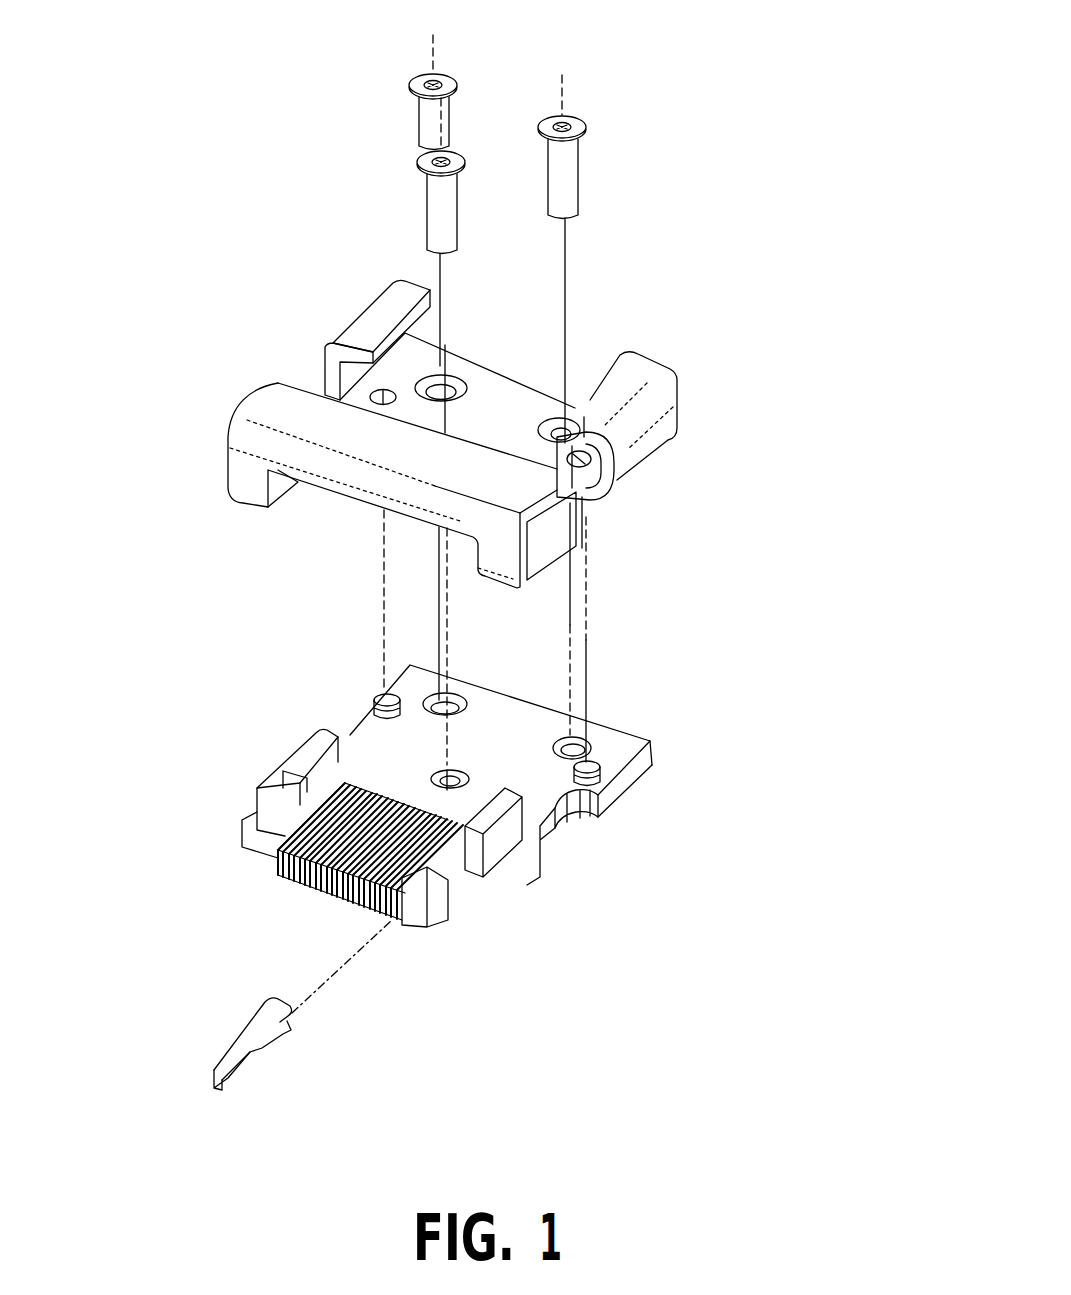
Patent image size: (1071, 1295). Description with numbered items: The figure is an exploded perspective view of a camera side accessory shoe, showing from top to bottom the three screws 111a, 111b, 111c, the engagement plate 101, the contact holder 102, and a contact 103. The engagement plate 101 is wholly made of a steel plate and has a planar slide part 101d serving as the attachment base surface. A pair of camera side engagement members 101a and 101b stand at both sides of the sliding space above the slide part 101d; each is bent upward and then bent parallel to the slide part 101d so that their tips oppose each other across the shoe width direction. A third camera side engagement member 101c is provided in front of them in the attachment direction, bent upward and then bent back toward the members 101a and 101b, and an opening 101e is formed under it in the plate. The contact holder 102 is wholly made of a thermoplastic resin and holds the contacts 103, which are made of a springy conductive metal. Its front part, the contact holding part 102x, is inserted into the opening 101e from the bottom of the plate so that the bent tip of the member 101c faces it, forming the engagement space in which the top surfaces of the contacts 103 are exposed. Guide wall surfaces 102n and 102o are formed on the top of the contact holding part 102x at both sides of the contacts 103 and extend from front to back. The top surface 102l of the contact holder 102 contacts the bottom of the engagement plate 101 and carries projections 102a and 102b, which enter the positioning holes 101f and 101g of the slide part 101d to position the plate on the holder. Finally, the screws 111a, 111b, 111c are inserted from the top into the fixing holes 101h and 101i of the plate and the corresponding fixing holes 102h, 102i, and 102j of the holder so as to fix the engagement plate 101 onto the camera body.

The engagement plate 101 is at (497, 459).
The camera side engagement member 101a is at (390, 315).
The camera side engagement member 101b is at (610, 387).
The camera side engagement member 101c is at (321, 476).
The slide part 101d is at (508, 402).
The opening 101e is at (322, 485).
The positioning hole 101f is at (367, 388).
The positioning hole 101g is at (592, 468).
The fixing hole 101h is at (448, 402).
The fixing hole 101i is at (555, 443).
The contact holder 102 is at (495, 811).
The projection 102a is at (370, 712).
The projection 102b is at (598, 783).
The fixing hole 102h is at (449, 700).
The fixing hole 102i is at (574, 742).
The fixing hole 102j is at (453, 787).
The top surface 102l is at (510, 720).
The guide wall surface 102n is at (312, 770).
The guide wall surface 102o is at (512, 810).
The contact holding part 102x is at (270, 828).
The contact 103 is at (290, 1028).
The screw 111a is at (447, 108).
The screw 111b is at (568, 185).
The screw 111c is at (432, 193).